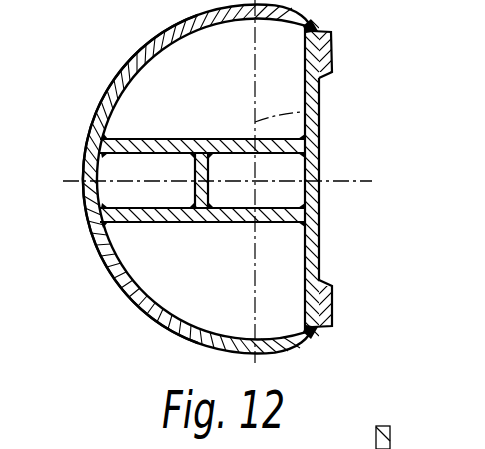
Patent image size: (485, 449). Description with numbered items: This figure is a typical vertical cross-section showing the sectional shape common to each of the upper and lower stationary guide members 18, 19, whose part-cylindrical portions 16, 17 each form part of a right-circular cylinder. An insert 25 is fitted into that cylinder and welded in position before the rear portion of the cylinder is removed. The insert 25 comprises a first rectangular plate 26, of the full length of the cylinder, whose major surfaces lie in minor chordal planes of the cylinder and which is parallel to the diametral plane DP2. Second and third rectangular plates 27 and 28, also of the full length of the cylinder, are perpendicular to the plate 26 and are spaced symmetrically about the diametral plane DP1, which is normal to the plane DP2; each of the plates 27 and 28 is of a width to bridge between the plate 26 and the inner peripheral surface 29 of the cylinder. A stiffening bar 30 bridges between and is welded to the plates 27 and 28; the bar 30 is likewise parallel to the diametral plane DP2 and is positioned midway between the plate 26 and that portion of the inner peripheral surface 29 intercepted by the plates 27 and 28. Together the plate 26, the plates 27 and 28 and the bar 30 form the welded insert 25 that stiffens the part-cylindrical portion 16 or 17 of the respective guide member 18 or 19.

The part-cylindrical portion 16 is at (124, 97).
The part-cylindrical portion 17 is at (131, 64).
The upper stationary guide member 18 is at (121, 261).
The lower stationary guide member 19 is at (100, 277).
The insert 25 is at (327, 222).
The first rectangular plate 26 is at (313, 266).
The second rectangular plate 27 is at (176, 139).
The third rectangular plate 28 is at (167, 222).
The inner peripheral surface 29 is at (180, 47).
The stiffening bar 30 is at (208, 194).
The diametral plane DP1 is at (318, 155).
The diametral plane DP2 is at (319, 112).